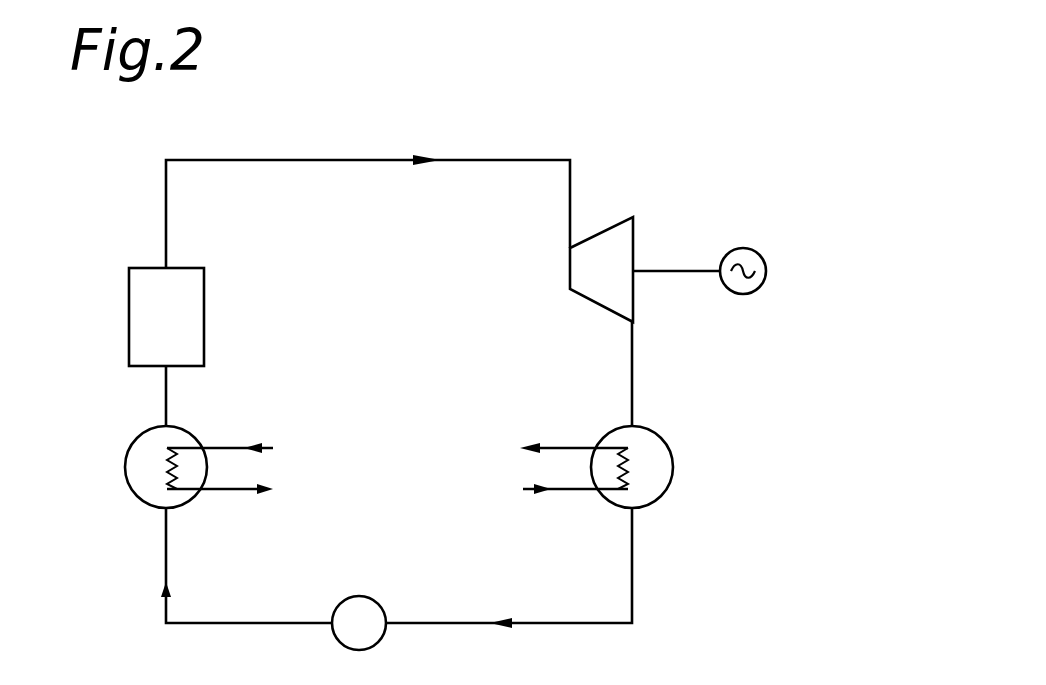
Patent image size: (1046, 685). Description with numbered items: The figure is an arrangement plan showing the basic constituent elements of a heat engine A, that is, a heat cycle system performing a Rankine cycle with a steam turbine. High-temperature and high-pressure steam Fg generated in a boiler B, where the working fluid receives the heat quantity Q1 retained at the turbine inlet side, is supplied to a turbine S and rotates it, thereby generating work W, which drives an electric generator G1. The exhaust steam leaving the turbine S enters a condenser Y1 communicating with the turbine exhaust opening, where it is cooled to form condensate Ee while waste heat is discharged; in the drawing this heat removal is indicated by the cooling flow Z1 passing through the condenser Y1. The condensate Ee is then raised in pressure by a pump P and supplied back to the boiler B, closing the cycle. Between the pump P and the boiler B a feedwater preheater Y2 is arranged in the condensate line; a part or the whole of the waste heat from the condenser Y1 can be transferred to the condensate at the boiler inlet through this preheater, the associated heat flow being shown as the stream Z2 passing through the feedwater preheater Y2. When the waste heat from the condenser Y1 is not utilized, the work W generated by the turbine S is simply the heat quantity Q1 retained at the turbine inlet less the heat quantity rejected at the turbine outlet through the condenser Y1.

The heat engine A is at (525, 147).
The boiler B is at (166, 317).
The heat quantity Q1 is at (242, 321).
The steam Fg is at (396, 178).
The turbine S is at (601, 269).
The work (output) W is at (676, 252).
The electric generator G1 is at (770, 280).
The condenser Y1 is at (665, 438).
The cooling medium flow with heat removal Q2 Z1 is at (453, 446).
The feedwater preheater Y2 is at (130, 444).
The cooling medium flow with heat removal Q3 Z2 is at (348, 491).
The pump P is at (359, 623).
The water (feedwater or condensate) Ee is at (526, 606).